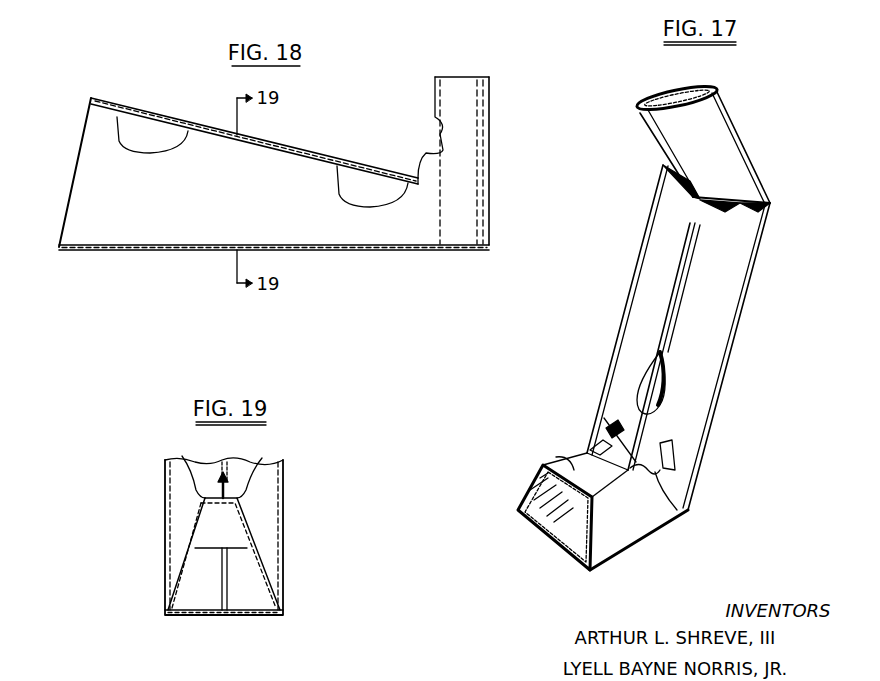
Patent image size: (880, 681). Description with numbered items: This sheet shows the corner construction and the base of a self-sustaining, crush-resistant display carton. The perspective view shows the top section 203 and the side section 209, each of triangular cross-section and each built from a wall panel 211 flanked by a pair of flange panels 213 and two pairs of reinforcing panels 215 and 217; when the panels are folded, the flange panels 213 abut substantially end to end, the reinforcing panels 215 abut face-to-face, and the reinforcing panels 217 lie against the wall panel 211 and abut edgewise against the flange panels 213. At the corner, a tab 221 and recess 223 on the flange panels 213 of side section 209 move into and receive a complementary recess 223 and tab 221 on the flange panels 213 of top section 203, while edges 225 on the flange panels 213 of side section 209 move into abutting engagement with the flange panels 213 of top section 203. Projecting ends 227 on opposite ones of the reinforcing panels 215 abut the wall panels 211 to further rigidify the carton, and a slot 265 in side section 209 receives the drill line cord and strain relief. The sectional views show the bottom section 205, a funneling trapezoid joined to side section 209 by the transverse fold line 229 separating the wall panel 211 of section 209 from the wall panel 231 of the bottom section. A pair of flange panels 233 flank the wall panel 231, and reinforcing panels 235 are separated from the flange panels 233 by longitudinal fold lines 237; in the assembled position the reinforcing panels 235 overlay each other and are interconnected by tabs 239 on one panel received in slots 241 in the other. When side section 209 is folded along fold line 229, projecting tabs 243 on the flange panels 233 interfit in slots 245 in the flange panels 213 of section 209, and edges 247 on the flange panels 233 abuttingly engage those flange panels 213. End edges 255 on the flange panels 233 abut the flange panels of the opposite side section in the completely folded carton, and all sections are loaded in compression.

In FIG. 17, the top section 203 is at (655, 318).
In FIG. 18, the bottom section 205 is at (142, 252).
In FIG. 17, the bottom section 205 is at (642, 553).
In FIG. 19, the bottom section 205 is at (266, 556).
In FIG. 18, the side section 209 is at (492, 190).
In FIG. 17, the side section 209 is at (716, 428).
In FIG. 19, the side section 209 is at (286, 474).
In FIG. 18, the wall panel 211 is at (490, 232).
In FIG. 17, the wall panel 211 is at (670, 92).
In FIG. 17, the flange panel 213 is at (735, 127).
In FIG. 19, the flange panel 213 is at (178, 495).
In FIG. 18, the reinforcing panel 215 is at (455, 92).
In FIG. 17, the reinforcing panel 215 is at (648, 100).
In FIG. 17, the reinforcing panel 217 is at (702, 90).
In FIG. 17, the tab 221 is at (690, 186).
In FIG. 17, the recess 223 is at (750, 195).
In FIG. 17, the edge 225 is at (770, 203).
In FIG. 17, the projecting end 227 is at (706, 198).
In FIG. 18, the transverse fold line 229 is at (492, 252).
In FIG. 18, the wall panel 231 is at (215, 252).
In FIG. 17, the wall panel 231 is at (568, 533).
In FIG. 19, the wall panel 231 is at (197, 616).
In FIG. 18, the flange panel 233 is at (210, 223).
In FIG. 17, the flange panel 233 is at (527, 500).
In FIG. 19, the flange panel 233 is at (273, 585).
In FIG. 18, the reinforcing panel 235 is at (284, 140).
In FIG. 17, the reinforcing panel 235 is at (565, 462).
In FIG. 19, the reinforcing panel 235 is at (187, 458).
In FIG. 19, the longitudinal fold line 237 is at (172, 462).
In FIG. 18, the tab 239 is at (148, 140).
In FIG. 19, the tab 239 is at (208, 568).
In FIG. 18, the slot 241 is at (125, 108).
In FIG. 19, the slot 241 is at (188, 556).
In FIG. 17, the projecting tab 243 is at (600, 447).
In FIG. 17, the slot 245 is at (622, 438).
In FIG. 17, the edge 247 is at (656, 450).
In FIG. 18, the end edge 255 is at (68, 182).
In FIG. 18, the slot 265 is at (447, 136).
In FIG. 17, the slot 265 is at (665, 392).
In FIG. 19, the slot 265 is at (227, 472).